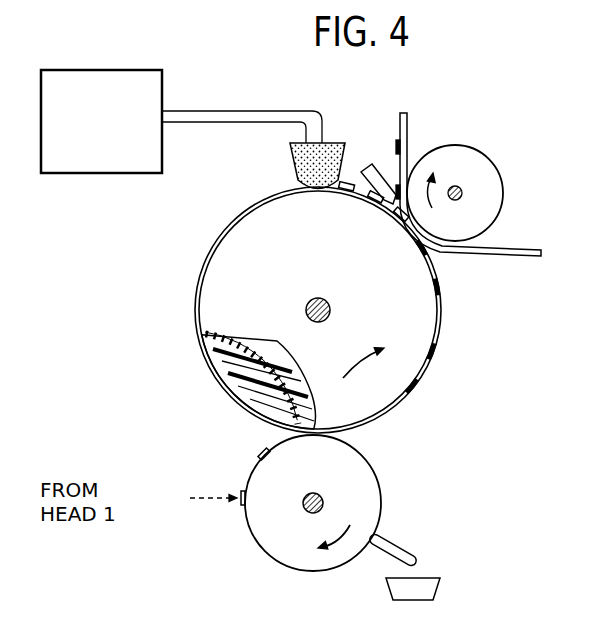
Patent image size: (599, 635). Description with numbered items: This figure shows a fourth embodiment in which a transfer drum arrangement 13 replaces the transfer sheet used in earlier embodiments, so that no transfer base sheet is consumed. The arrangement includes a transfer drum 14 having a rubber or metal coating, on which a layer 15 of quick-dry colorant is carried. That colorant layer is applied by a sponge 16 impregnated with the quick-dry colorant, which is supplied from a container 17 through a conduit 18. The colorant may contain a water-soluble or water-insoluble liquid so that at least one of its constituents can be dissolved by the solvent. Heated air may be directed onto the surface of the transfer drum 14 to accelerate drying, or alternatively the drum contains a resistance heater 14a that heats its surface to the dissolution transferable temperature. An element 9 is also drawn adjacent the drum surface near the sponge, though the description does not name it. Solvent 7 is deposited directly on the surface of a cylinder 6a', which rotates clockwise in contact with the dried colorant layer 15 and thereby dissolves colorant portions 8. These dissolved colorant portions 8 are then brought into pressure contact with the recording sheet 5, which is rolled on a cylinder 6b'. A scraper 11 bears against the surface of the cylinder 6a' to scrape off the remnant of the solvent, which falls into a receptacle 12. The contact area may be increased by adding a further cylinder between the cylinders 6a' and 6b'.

The recording sheet 5 is at (500, 262).
The cylinder 6a' is at (346, 503).
The cylinder 6b' is at (477, 176).
The solvent 7 is at (263, 452).
The colorant portions 8 is at (431, 353).
The blade 9 is at (362, 168).
The scraper 11 is at (419, 551).
The receptacle 12 is at (440, 584).
The transfer drum arrangement 13 is at (286, 310).
The transfer drum 14 is at (331, 262).
The resistance heater 14a is at (218, 337).
The layer of colorant 15 is at (197, 310).
The sponge 16 is at (291, 168).
The container 17 is at (163, 167).
The conduit 18 is at (250, 110).